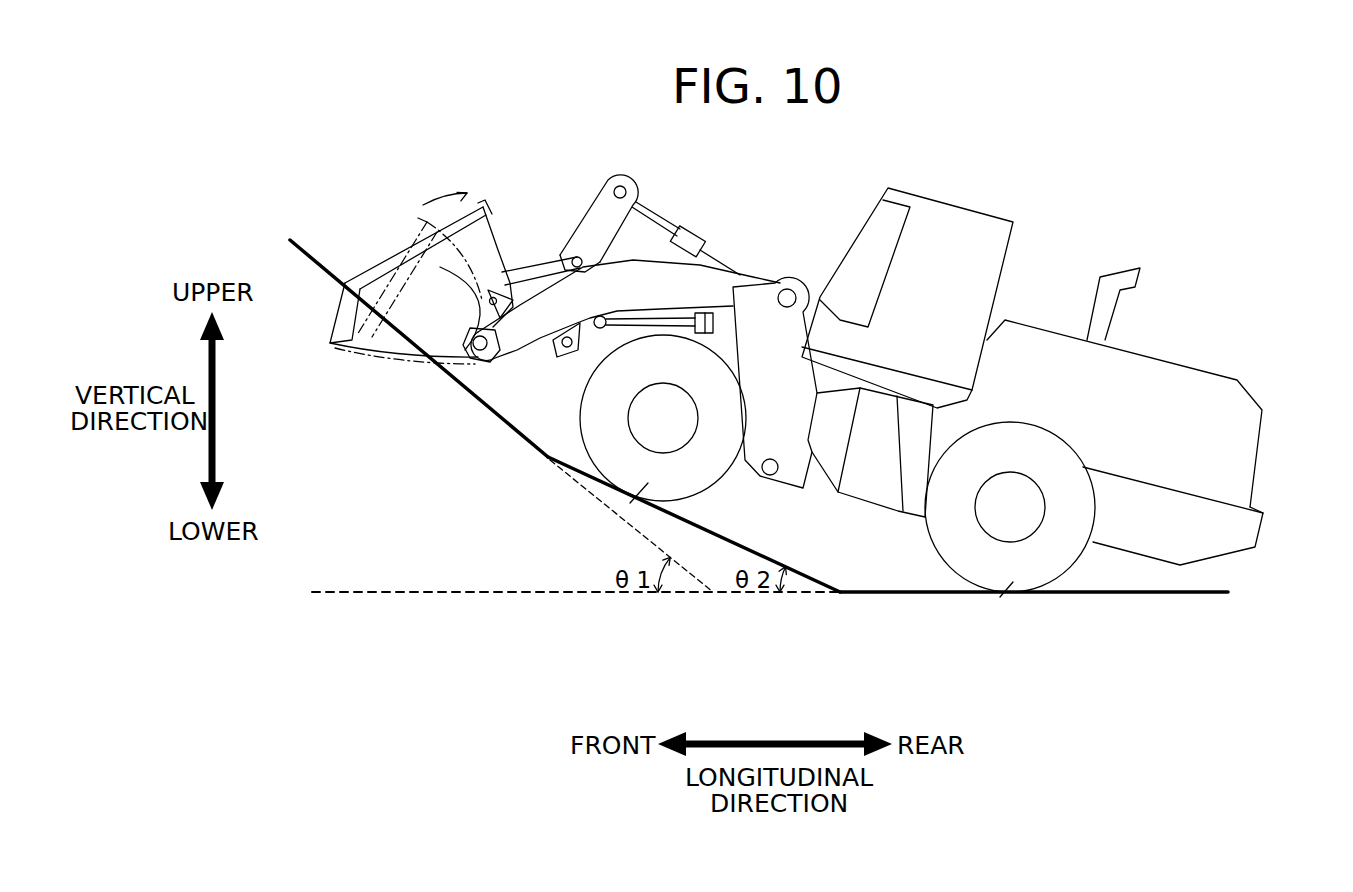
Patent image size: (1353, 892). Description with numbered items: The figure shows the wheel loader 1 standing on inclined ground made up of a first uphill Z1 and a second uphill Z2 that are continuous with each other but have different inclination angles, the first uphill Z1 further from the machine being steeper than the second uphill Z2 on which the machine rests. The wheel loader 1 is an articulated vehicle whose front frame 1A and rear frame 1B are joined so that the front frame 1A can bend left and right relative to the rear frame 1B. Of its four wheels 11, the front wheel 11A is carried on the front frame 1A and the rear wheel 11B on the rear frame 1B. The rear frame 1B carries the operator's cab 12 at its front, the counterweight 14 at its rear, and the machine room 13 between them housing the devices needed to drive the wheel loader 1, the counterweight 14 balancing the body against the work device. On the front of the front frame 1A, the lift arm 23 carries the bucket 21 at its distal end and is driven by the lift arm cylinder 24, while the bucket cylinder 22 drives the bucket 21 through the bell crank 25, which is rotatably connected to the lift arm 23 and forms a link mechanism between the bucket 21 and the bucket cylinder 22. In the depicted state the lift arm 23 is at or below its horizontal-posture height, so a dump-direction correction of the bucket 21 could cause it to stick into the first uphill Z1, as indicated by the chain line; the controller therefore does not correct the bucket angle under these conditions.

The wheel loader 1 is at (1212, 217).
The front frame 1A is at (762, 497).
The rear frame 1B is at (1115, 572).
The wheels 11 is at (630, 451).
The front wheel 11A is at (648, 485).
The rear wheel 11B is at (1013, 583).
The operator's cab 12 is at (985, 213).
The machine room 13 is at (1195, 370).
The counterweight 14 is at (1262, 522).
The bucket 21 is at (490, 233).
The bucket cylinder 22 is at (712, 248).
The lift arm 23 is at (520, 347).
The lift arm cylinder 24 is at (692, 332).
The bell crank 25 is at (600, 207).
The first uphill Z1 is at (455, 395).
The second uphill Z2 is at (713, 596).